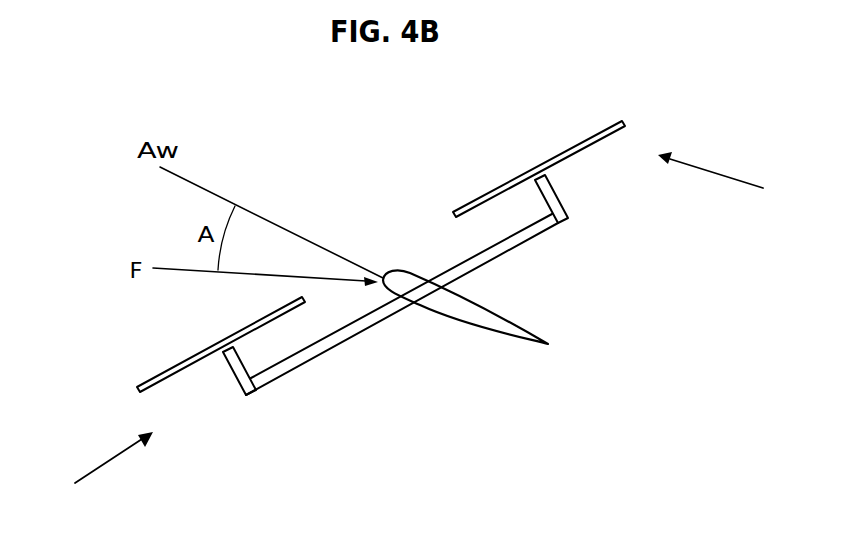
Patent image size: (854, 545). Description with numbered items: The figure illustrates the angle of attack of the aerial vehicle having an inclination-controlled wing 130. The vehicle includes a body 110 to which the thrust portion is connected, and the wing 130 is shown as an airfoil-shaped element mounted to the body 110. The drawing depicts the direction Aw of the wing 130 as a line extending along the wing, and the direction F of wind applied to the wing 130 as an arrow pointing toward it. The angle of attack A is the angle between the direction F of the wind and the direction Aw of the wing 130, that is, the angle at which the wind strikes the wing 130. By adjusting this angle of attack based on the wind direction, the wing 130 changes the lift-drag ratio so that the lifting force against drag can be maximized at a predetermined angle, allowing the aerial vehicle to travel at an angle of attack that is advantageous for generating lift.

The body 110 is at (327, 347).
The wing 130 is at (465, 315).